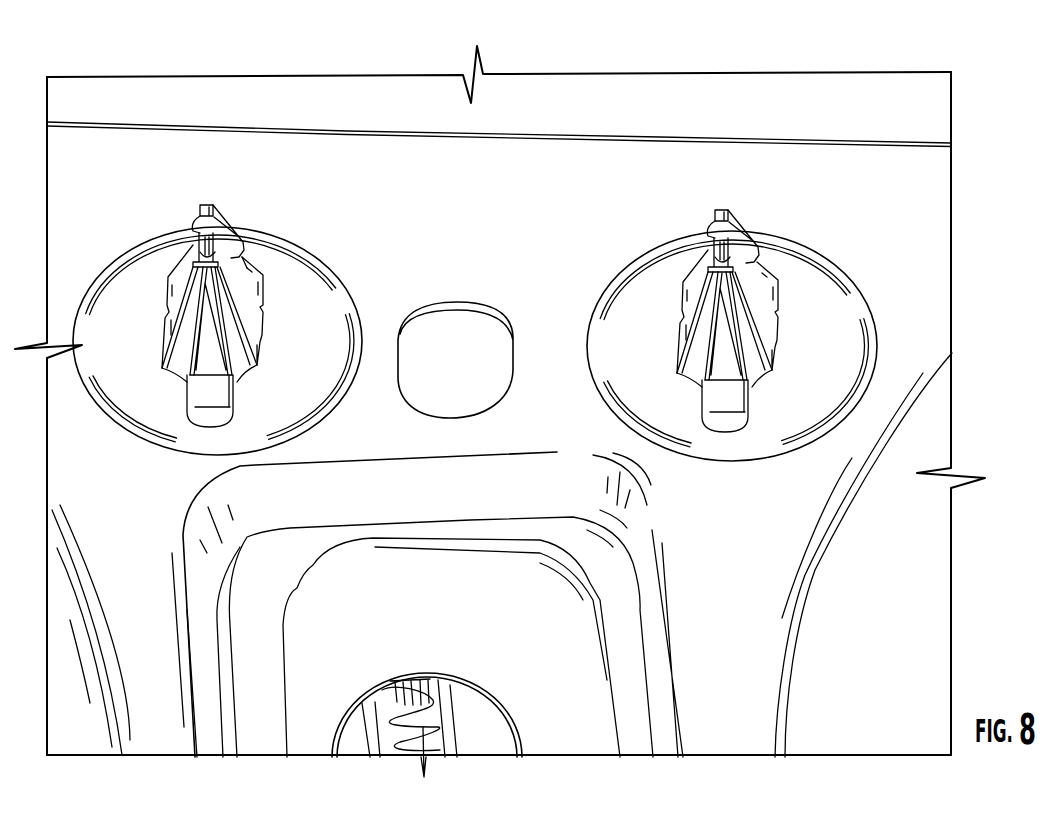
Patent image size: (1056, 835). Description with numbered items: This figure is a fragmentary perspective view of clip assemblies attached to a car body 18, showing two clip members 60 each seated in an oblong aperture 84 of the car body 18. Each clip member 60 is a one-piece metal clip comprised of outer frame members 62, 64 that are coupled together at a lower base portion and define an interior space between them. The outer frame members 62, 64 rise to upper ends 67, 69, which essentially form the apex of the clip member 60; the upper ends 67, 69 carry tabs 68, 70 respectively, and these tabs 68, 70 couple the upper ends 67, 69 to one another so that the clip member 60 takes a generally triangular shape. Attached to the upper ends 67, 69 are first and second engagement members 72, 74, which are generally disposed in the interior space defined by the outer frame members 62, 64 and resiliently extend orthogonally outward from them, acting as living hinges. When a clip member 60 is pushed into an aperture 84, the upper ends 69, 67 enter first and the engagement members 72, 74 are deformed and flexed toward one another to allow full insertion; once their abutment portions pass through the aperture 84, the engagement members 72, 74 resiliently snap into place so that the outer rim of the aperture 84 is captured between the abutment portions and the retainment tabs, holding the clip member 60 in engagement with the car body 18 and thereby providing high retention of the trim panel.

The car body 18 is at (476, 223).
The clip member 60 is at (277, 289).
The outer frame member 62 is at (222, 344).
The outer frame member 64 is at (187, 363).
The upper end 67 is at (216, 221).
The tab 68 is at (199, 205).
The upper end 69 is at (197, 246).
The tab 70 is at (247, 268).
The first engagement member 72 is at (213, 247).
The second engagement member 74 is at (182, 292).
The aperture 84 is at (222, 422).